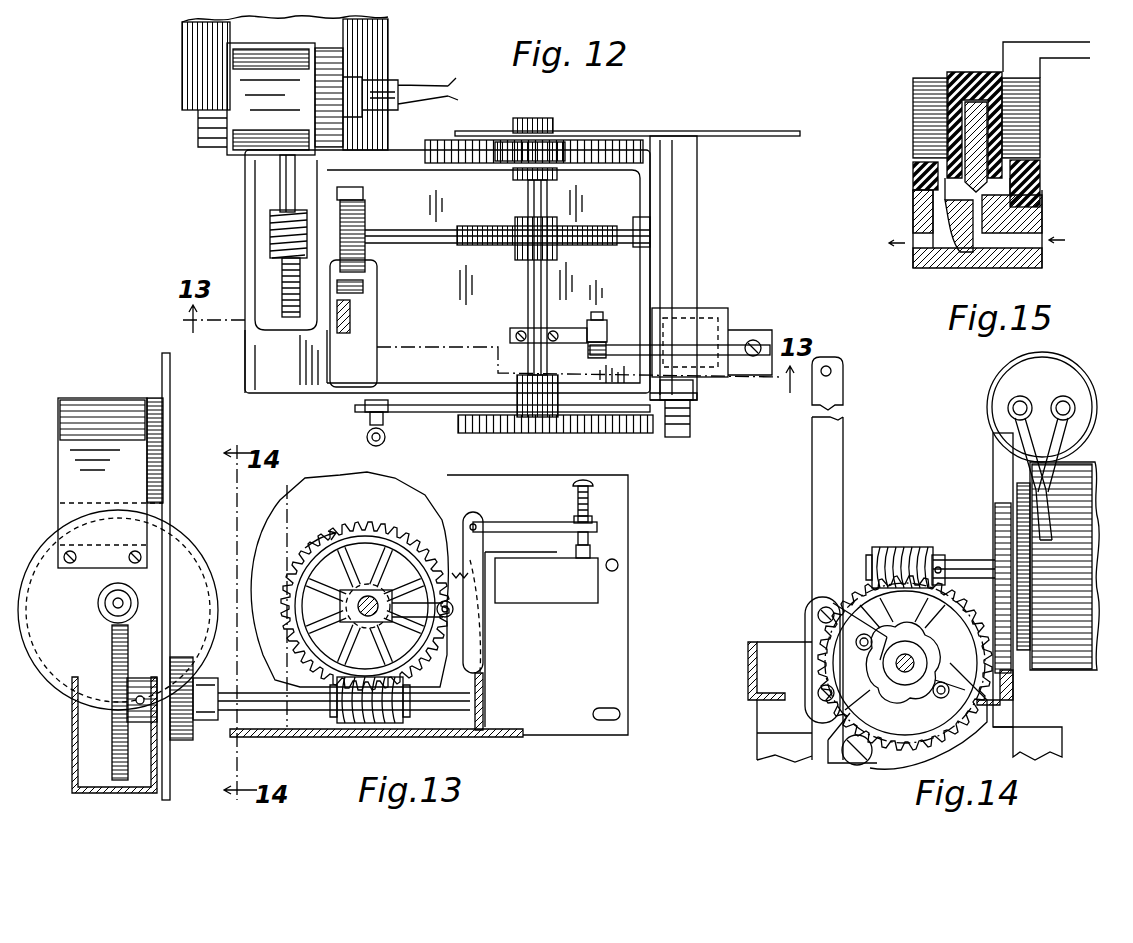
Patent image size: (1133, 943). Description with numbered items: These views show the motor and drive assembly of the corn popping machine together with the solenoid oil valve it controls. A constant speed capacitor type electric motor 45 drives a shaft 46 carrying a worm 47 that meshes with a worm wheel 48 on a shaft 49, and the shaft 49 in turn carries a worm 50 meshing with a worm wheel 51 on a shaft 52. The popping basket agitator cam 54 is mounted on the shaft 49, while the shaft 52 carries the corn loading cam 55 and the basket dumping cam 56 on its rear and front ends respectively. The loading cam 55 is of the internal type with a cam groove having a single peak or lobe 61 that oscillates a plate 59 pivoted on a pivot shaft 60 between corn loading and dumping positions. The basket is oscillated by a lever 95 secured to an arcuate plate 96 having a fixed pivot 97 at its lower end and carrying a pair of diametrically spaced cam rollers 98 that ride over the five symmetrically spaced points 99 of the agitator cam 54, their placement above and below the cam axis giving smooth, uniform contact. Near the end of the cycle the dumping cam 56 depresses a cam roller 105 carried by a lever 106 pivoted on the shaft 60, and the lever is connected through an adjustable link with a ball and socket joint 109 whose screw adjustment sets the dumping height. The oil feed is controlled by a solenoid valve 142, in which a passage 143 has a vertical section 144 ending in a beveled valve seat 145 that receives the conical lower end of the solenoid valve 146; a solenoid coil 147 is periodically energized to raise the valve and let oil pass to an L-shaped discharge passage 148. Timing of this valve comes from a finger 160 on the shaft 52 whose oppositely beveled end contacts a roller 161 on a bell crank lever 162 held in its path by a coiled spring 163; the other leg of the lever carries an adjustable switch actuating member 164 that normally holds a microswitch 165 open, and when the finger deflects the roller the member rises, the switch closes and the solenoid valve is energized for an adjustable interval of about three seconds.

In FIG. 12, the electric motor 45 is at (186, 66).
In FIG. 13, the electric motor 45 is at (187, 533).
In FIG. 14, the electric motor 45 is at (1058, 670).
In FIG. 12, the shaft 46 is at (280, 175).
In FIG. 13, the shaft 46 is at (110, 596).
In FIG. 14, the shaft 46 is at (960, 558).
In FIG. 12, the worm 47 is at (272, 230).
In FIG. 13, the worm 47 is at (100, 606).
In FIG. 14, the worm 47 is at (905, 548).
In FIG. 12, the worm wheel 48 is at (283, 302).
In FIG. 13, the worm wheel 48 is at (112, 646).
In FIG. 14, the worm wheel 48 is at (946, 610).
In FIG. 12, the shaft 49 is at (418, 229).
In FIG. 13, the shaft 49 is at (251, 691).
In FIG. 14, the shaft 49 is at (907, 673).
In FIG. 12, the worm 50 is at (516, 225).
In FIG. 13, the worm 50 is at (356, 725).
In FIG. 12, the worm wheel 51 is at (515, 244).
In FIG. 13, the worm wheel 51 is at (380, 532).
In FIG. 12, the shaft 52 is at (528, 284).
In FIG. 13, the shaft 52 is at (373, 599).
In FIG. 12, the agitator cam 54 is at (362, 266).
In FIG. 13, the agitator cam 54 is at (185, 740).
In FIG. 14, the agitator cam 54 is at (930, 655).
In FIG. 12, the corn loading cam 55 is at (618, 147).
In FIG. 13, the corn loading cam 55 is at (403, 510).
In FIG. 12, the basket dumping cam 56 is at (601, 426).
In FIG. 12, the plate 59 is at (728, 132).
In FIG. 13, the plate 59 is at (620, 623).
In FIG. 12, the pivot shaft 60 is at (675, 214).
In FIG. 12, the peak or lobe 61 is at (558, 150).
In FIG. 12, the lever 95 is at (350, 321).
In FIG. 13, the lever 95 is at (171, 374).
In FIG. 14, the lever 95 is at (815, 492).
In FIG. 12, the arcuate plate 96 is at (362, 290).
In FIG. 14, the arcuate plate 96 is at (925, 730).
In FIG. 14, the fixed pivot 97 is at (855, 762).
In FIG. 12, the cam rollers 98 is at (355, 188).
In FIG. 14, the cam rollers 98 is at (860, 652).
In FIG. 14, the points 99 is at (890, 690).
In FIG. 12, the cam roller 105 is at (646, 430).
In FIG. 12, the lever 106 is at (434, 413).
In FIG. 12, the ball and socket joint 109 is at (366, 437).
In FIG. 15, the solenoid valve 142 is at (1042, 176).
In FIG. 15, the passage 143 is at (1042, 250).
In FIG. 15, the vertical section 144 is at (950, 262).
In FIG. 15, the valve seat 145 is at (1015, 168).
In FIG. 15, the solenoid valve 146 is at (913, 184).
In FIG. 15, the solenoid coil 147 is at (913, 108).
In FIG. 15, the discharge passage 148 is at (913, 248).
In FIG. 12, the finger 160 is at (570, 330).
In FIG. 13, the finger 160 is at (470, 640).
In FIG. 12, the roller 161 is at (600, 319).
In FIG. 13, the roller 161 is at (455, 614).
In FIG. 12, the bell crank lever 162 is at (740, 342).
In FIG. 13, the bell crank lever 162 is at (523, 530).
In FIG. 13, the coiled spring 163 is at (465, 580).
In FIG. 12, the switch actuating member 164 is at (757, 341).
In FIG. 13, the switch actuating member 164 is at (588, 503).
In FIG. 13, the microswitch 165 is at (592, 549).